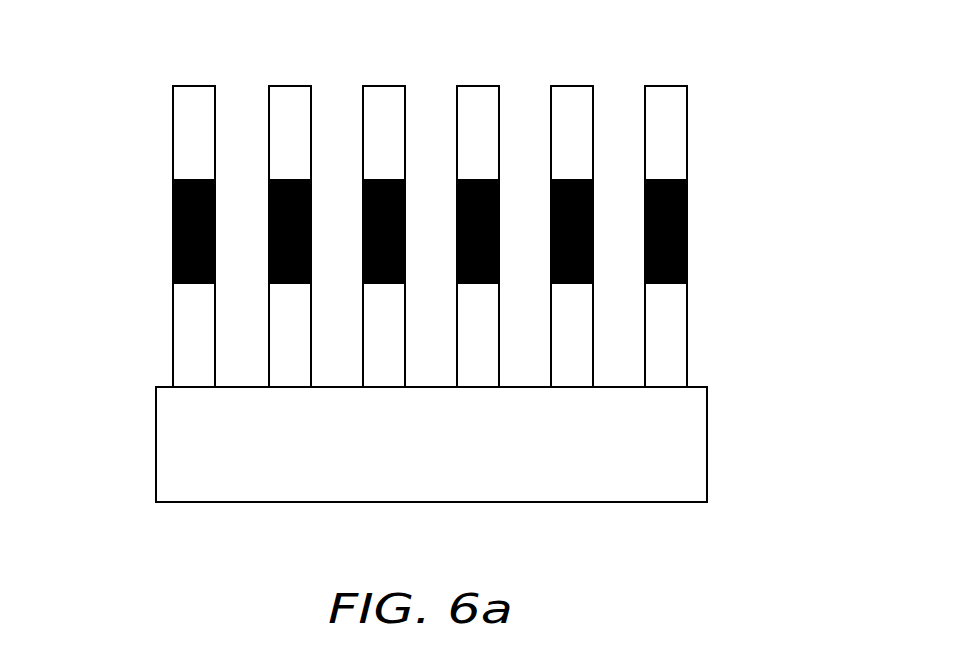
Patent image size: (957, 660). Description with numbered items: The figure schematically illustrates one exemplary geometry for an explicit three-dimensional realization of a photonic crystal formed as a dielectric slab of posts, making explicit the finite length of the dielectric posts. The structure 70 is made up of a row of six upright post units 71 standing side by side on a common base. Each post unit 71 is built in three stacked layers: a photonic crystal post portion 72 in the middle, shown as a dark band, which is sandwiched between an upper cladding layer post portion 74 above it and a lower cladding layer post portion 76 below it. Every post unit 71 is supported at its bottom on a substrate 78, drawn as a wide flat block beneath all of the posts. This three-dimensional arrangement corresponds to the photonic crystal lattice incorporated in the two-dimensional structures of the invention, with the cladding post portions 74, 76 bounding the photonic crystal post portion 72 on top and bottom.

The structure 70 is at (403, 289).
The post unit 71 is at (173, 125).
The photonic crystal post portion 72 is at (688, 230).
The upper cladding layer post portion 74 is at (687, 127).
The lower cladding layer post portion 76 is at (687, 332).
The substrate 78 is at (707, 432).